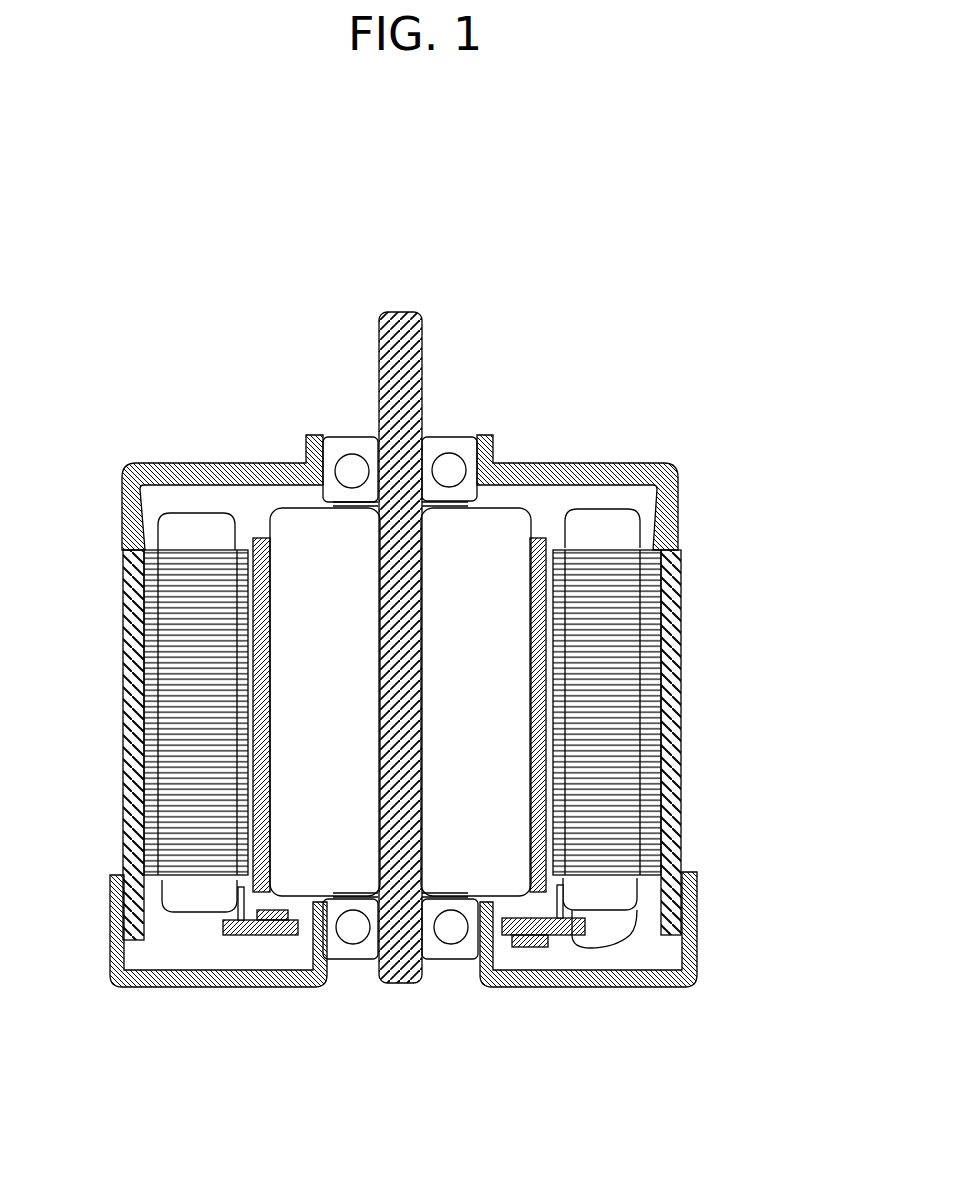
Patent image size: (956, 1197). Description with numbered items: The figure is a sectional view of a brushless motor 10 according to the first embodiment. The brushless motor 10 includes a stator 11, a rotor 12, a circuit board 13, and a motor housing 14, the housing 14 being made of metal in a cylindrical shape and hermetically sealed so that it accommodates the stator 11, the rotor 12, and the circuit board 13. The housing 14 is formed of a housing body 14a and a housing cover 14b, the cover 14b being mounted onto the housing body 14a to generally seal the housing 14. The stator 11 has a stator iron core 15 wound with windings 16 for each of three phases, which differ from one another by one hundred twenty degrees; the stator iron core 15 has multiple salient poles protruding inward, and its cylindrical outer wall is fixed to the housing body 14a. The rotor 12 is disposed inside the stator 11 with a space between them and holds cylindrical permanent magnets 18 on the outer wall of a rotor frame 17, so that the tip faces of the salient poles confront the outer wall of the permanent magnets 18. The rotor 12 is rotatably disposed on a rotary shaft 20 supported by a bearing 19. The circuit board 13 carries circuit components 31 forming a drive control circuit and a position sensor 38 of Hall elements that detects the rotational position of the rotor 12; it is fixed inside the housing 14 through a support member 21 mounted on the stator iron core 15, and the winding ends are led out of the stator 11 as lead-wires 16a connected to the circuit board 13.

The brushless motor 10 is at (137, 465).
The stator 11 is at (613, 510).
The rotor 12 is at (432, 634).
The circuit board 13 is at (262, 935).
The motor housing 14 is at (471, 768).
The housing body 14a is at (667, 855).
The housing cover 14b is at (444, 929).
The stator iron core 15 is at (645, 640).
The windings 16 is at (620, 530).
The lead-wires 16a is at (630, 930).
The rotor frame 17 is at (307, 520).
The permanent magnets 18 is at (258, 543).
The bearing 19 is at (358, 455).
The rotary shaft 20 is at (418, 372).
The support member 21 is at (237, 907).
The circuit components 31 is at (535, 945).
The position sensor 38 is at (280, 935).